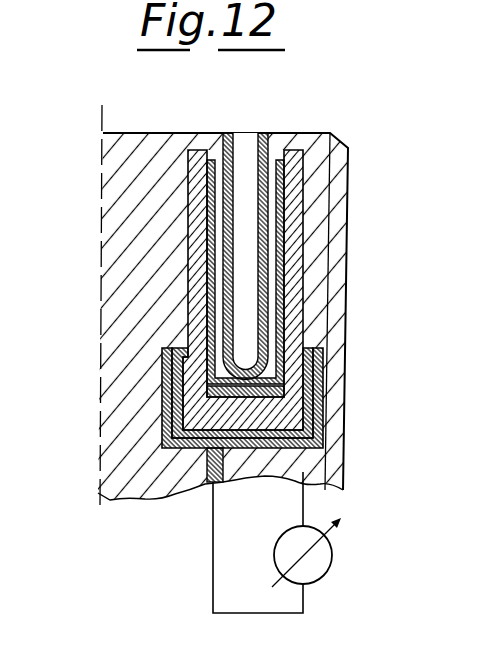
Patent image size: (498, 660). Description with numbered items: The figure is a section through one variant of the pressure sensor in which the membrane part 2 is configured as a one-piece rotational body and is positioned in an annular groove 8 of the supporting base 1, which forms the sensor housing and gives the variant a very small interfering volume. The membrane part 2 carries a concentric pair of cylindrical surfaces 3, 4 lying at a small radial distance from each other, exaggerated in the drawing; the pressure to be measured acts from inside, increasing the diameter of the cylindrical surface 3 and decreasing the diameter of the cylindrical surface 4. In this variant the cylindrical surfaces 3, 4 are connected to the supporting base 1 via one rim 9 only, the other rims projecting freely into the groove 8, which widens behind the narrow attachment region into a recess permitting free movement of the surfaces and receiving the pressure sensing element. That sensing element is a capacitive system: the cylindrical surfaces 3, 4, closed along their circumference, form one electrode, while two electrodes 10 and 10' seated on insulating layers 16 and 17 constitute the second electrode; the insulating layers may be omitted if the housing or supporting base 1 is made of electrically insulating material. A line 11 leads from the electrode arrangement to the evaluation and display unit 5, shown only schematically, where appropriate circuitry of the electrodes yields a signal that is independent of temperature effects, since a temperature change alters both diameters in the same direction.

The supporting base 1 is at (143, 243).
The membrane part 2 is at (250, 127).
The cylindrical surface 3 is at (277, 213).
The cylindrical surface 4 is at (227, 211).
The evaluation and display unit 5 is at (323, 555).
The annular groove 8 is at (308, 252).
The rim 9 is at (222, 133).
The electrode 10 is at (353, 270).
The electrode 10' is at (129, 265).
The line 11 is at (162, 408).
The insulating layer 16 is at (303, 228).
The insulating layer 17 is at (187, 320).